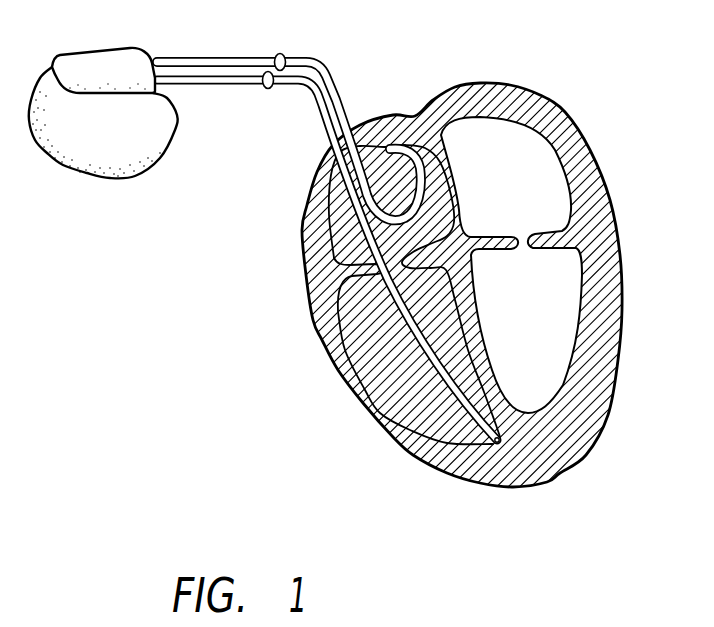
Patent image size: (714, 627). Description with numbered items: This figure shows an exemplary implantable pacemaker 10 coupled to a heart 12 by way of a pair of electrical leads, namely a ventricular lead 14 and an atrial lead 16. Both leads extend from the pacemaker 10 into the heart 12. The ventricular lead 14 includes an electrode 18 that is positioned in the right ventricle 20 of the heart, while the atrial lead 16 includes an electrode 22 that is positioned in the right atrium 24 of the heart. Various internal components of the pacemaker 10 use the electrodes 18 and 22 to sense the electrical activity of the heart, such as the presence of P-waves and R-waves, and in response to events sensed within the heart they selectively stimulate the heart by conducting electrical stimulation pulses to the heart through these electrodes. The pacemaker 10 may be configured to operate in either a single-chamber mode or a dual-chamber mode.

The implantable pacemaker 10 is at (113, 47).
The heart 12 is at (549, 106).
The ventricular lead 14 is at (267, 92).
The atrial lead 16 is at (282, 52).
The electrode 18 is at (484, 480).
The right ventricle 20 is at (418, 398).
The electrode 22 is at (363, 128).
The right atrium 24 is at (343, 232).